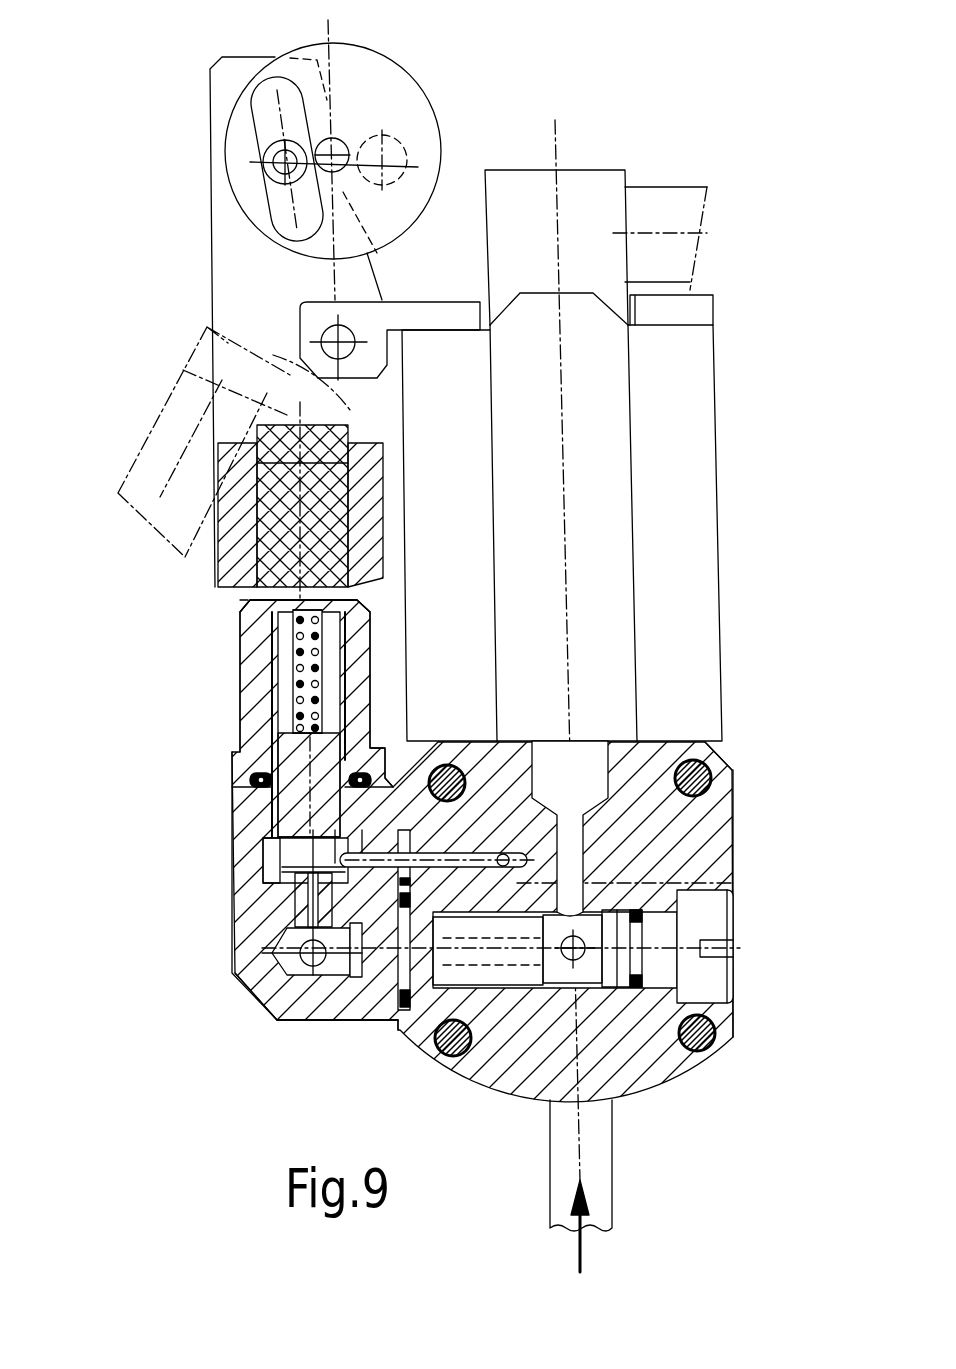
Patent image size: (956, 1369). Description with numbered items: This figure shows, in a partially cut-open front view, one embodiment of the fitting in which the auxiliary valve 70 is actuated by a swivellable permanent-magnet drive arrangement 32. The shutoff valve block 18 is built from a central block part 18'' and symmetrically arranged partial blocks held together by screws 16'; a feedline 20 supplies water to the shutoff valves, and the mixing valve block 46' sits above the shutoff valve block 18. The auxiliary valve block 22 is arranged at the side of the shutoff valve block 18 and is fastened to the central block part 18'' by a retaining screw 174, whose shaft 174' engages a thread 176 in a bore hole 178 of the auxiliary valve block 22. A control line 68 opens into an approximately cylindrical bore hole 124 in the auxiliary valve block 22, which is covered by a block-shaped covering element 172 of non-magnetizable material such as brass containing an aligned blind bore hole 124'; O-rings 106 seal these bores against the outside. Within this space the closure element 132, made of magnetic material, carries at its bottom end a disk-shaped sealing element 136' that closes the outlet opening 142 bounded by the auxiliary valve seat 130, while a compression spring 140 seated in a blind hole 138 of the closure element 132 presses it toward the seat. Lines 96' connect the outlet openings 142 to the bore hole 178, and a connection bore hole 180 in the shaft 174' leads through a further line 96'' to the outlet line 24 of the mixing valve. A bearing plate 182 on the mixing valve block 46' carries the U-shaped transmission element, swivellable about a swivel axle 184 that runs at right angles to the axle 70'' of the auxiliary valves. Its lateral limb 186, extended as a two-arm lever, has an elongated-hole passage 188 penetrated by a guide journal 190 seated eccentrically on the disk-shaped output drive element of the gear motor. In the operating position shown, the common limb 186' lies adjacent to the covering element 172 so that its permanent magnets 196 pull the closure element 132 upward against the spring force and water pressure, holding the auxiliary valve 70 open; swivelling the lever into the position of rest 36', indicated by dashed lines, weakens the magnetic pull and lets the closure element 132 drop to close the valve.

The drive arrangement 32 is at (463, 646).
The passage 188 is at (267, 103).
The guide journal 190 is at (250, 163).
The lateral limb 186 is at (288, 303).
The swivel axle 184 is at (300, 313).
The position of rest 36' is at (221, 442).
The common limb 186' is at (342, 515).
The permanent magnets 196 is at (327, 530).
The outlet line 24 is at (670, 207).
The bearing plate 182 is at (700, 322).
The mixing valve block 46' is at (602, 650).
The axle of the auxiliary valves 70'' is at (245, 594).
The covering element 172 is at (237, 633).
The blind hole 138 is at (290, 658).
The compression spring 140 is at (300, 676).
The blind bore hole 124' is at (261, 746).
The auxiliary valve 70 is at (255, 718).
The closure element 132 is at (245, 740).
The O-rings 106 is at (250, 780).
The bore hole 124 is at (247, 830).
The auxiliary valve block 22 is at (223, 820).
The sealing element 136' is at (262, 855).
The auxiliary valve seat 130 is at (290, 872).
The outlet opening 142 is at (290, 910).
The lines 96' is at (258, 906).
The bore hole 178 is at (265, 1010).
The connection bore hole 180 is at (335, 1017).
The thread 176 is at (385, 977).
The shaft of the retaining screw 174' is at (536, 979).
The retaining screw 174 is at (544, 945).
The control line 68 is at (480, 853).
The further line 96'' is at (580, 799).
The screws 16' is at (747, 748).
The shutoff valve block 18 is at (521, 851).
The central block part 18'' is at (675, 903).
The feedline 20 is at (560, 1137).